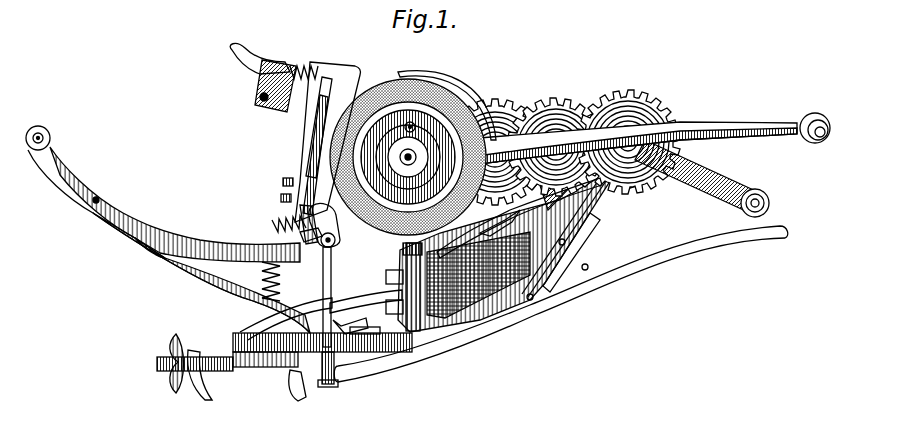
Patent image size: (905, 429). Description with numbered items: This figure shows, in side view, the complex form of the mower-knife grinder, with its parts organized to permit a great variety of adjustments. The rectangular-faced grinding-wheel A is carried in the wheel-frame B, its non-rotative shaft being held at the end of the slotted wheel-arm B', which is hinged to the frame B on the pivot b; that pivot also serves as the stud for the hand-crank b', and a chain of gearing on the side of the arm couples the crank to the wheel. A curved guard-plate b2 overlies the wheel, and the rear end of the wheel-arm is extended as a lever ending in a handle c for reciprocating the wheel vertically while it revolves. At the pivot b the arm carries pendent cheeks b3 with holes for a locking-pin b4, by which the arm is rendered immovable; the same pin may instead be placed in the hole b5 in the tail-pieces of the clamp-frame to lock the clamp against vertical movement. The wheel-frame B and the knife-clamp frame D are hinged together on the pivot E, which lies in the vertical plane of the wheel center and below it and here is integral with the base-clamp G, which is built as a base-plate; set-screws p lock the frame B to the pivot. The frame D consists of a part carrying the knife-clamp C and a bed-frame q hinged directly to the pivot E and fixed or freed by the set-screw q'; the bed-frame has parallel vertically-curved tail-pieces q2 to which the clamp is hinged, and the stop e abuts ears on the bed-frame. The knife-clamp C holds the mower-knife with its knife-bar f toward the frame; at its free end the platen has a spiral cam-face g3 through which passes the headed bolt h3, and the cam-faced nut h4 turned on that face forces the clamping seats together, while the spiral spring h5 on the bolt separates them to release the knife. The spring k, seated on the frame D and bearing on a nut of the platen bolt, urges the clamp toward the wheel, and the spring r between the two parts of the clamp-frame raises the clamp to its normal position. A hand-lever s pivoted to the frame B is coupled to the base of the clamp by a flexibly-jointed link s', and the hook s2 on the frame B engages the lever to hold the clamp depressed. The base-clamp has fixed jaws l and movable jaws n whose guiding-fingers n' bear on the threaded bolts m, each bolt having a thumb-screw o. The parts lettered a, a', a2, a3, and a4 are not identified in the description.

The grinding wheel a is at (408, 152).
The lever a' is at (335, 225).
The arm a2 is at (324, 224).
The pin and arm a3 is at (489, 183).
The bracket a4 is at (350, 321).
The grinding-wheel A is at (339, 237).
The pivot b is at (630, 142).
The hand-crank b' is at (702, 178).
The curved guard-plate b2 is at (447, 96).
The pendent cheeks b3 is at (616, 140).
The locking-pin b4 is at (626, 190).
The hole b5 is at (97, 200).
The grinding-wheel frame B is at (505, 251).
The wheel-arm B' is at (595, 147).
The handle c is at (655, 170).
The knife-clamp C is at (327, 132).
The knife-clamp frame D is at (169, 240).
The stop e is at (365, 331).
The pivot E is at (402, 287).
The knife-bar f is at (312, 160).
The spiral cam-face g3 is at (260, 54).
The base-clamp G is at (322, 363).
The headed bolt h3 is at (260, 97).
The cam-faced nut h4 is at (275, 91).
The expansive spiral spring h5 is at (304, 61).
The expansive spiral spring k is at (282, 225).
The fixed jaws l is at (313, 382).
The clamp-bolt m is at (158, 363).
The movable jaws n is at (200, 382).
The guiding-finger n' is at (251, 343).
The thumb-screw o is at (169, 367).
The set-screws p is at (386, 276).
The bed-frame q is at (286, 317).
The set-screw q' is at (366, 300).
The tail-pieces q2 is at (201, 273).
The expansive spring r is at (276, 281).
The hand-lever s is at (560, 304).
The link s' is at (335, 297).
The hook s2 is at (580, 226).